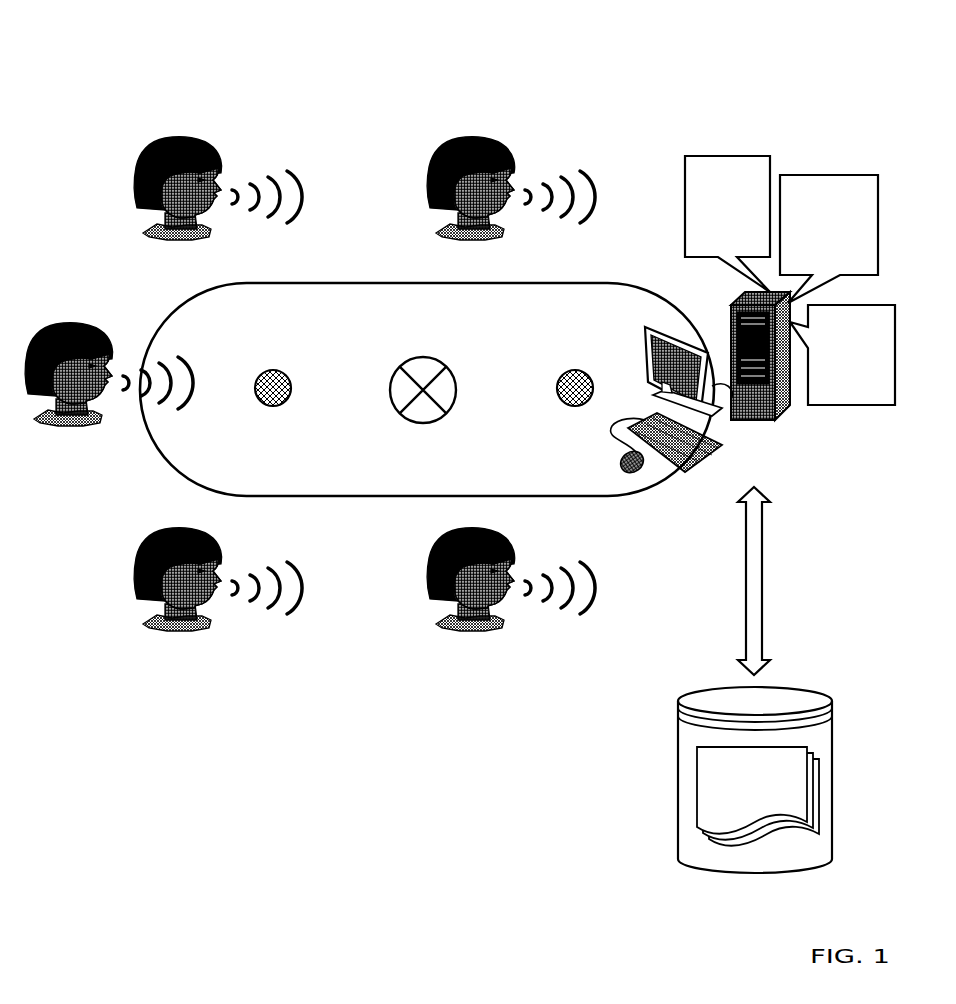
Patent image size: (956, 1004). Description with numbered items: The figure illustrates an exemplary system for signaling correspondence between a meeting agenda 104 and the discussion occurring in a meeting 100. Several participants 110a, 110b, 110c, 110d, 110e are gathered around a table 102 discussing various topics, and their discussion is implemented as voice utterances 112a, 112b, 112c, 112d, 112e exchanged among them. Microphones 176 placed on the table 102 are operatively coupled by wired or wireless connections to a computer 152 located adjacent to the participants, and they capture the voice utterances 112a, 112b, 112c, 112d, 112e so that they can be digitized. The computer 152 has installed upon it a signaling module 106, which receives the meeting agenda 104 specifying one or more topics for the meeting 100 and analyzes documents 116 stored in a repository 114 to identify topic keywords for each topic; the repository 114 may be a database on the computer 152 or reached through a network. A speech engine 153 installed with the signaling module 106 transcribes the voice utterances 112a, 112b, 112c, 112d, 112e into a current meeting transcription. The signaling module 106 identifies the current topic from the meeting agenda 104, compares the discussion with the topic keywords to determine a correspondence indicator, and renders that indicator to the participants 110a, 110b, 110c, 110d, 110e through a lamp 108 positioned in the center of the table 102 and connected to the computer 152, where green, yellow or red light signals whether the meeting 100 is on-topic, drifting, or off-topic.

The meeting 100 is at (210, 42).
The table 102 is at (172, 466).
The meeting agenda 104 is at (744, 241).
The signaling module 106 is at (813, 260).
The lamp 108 is at (390, 368).
The participant 110a is at (258, 264).
The participant 110b is at (549, 264).
The participant 110c is at (147, 455).
The participant 110d is at (258, 655).
The participant 110e is at (549, 655).
The voice utterance 112a is at (327, 224).
The voice utterance 112b is at (608, 222).
The voice utterance 112c is at (234, 395).
The voice utterance 112d is at (323, 616).
The voice utterance 112e is at (622, 616).
The repository 114 is at (818, 901).
The documents 116 is at (737, 806).
The computer 152 is at (790, 476).
The speech engine 153 is at (835, 391).
The microphones 176 is at (297, 407).